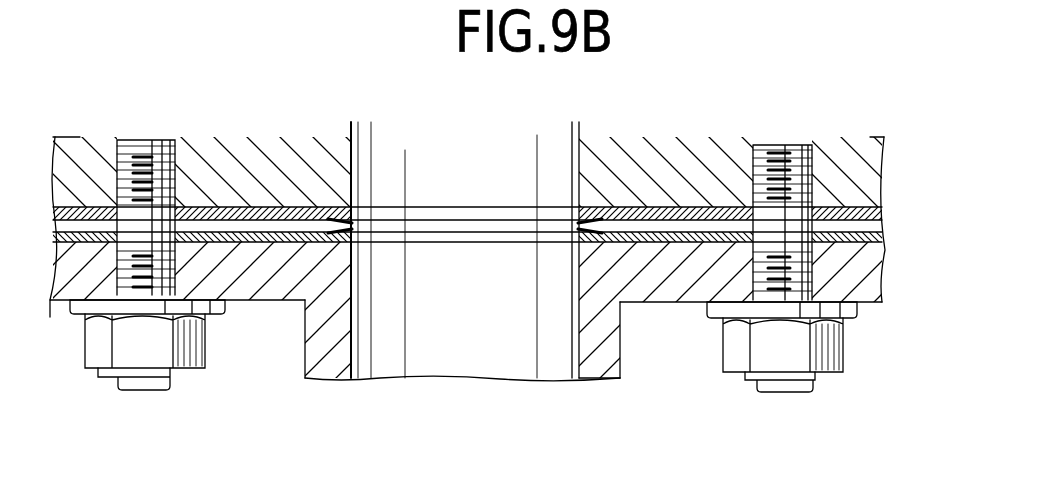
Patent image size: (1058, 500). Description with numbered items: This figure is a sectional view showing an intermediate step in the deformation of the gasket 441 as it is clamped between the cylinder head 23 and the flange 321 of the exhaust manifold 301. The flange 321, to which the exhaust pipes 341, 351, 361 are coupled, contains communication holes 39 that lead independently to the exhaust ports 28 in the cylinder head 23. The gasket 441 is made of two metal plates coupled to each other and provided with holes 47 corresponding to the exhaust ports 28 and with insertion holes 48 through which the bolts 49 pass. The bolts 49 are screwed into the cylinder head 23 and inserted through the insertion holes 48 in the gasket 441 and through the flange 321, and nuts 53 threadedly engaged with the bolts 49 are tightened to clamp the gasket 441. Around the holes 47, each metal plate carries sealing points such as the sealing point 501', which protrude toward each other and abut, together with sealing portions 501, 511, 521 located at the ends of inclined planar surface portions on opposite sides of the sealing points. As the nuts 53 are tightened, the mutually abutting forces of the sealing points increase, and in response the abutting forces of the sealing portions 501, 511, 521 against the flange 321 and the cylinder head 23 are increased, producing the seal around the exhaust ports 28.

The cylinder head 23 is at (853, 163).
The exhaust port 28 is at (580, 177).
The exhaust manifold 301 is at (305, 347).
The flange 321 is at (666, 255).
The exhaust pipe 341 is at (603, 333).
The exhaust pipe 351 is at (647, 375).
The exhaust pipe 361 is at (678, 413).
The communication hole 39 is at (400, 228).
The gasket 441 is at (237, 206).
The hole 47 is at (573, 212).
The insertion hole 48 is at (798, 208).
The bolt 49 is at (122, 142).
The sealing portion 501 is at (467, 187).
The sealing point 501' is at (435, 163).
The sealing portion 511 is at (274, 187).
The sealing portion 521 is at (296, 187).
The nut 53 is at (102, 342).